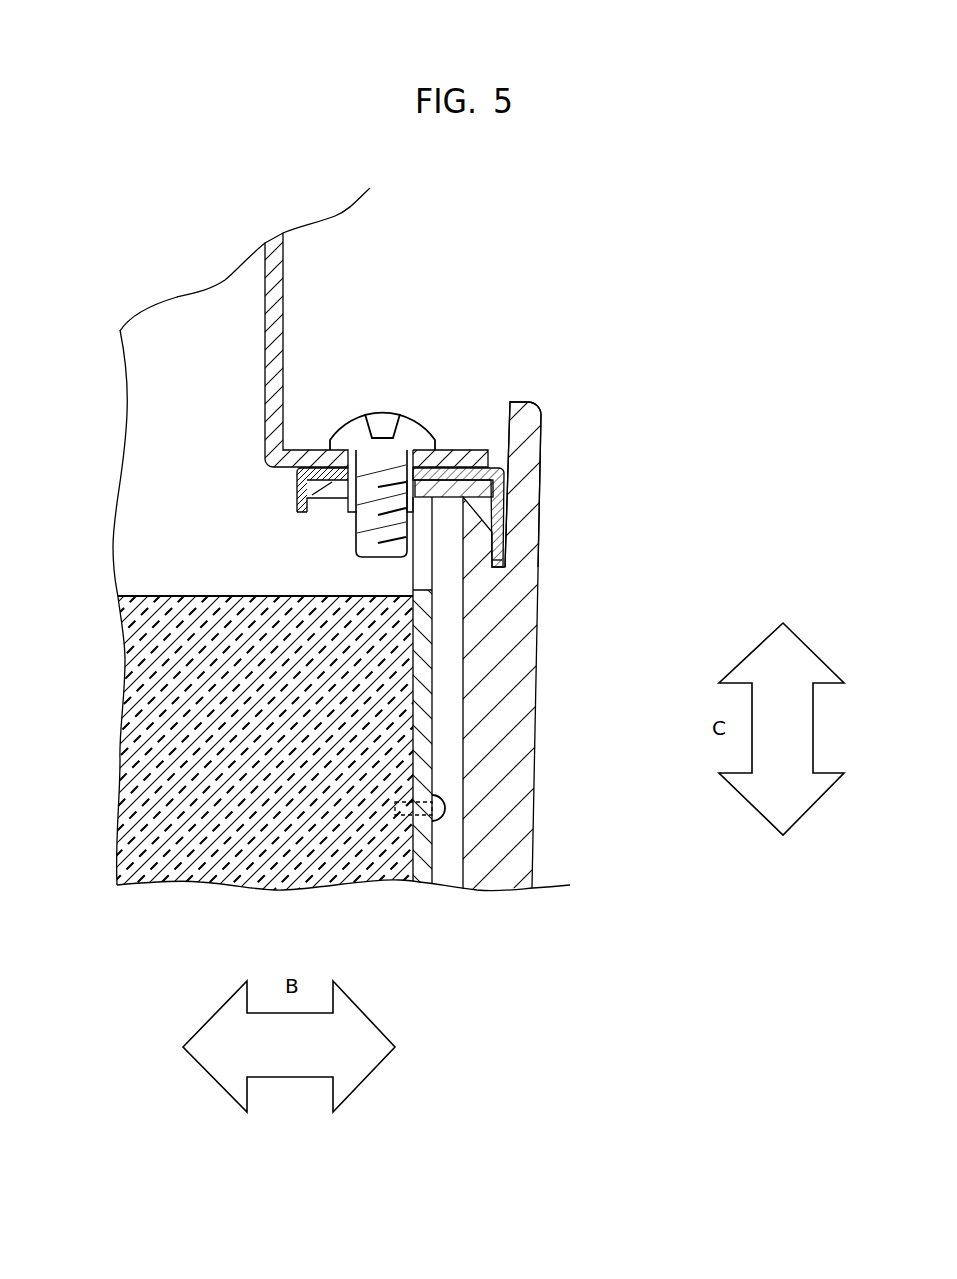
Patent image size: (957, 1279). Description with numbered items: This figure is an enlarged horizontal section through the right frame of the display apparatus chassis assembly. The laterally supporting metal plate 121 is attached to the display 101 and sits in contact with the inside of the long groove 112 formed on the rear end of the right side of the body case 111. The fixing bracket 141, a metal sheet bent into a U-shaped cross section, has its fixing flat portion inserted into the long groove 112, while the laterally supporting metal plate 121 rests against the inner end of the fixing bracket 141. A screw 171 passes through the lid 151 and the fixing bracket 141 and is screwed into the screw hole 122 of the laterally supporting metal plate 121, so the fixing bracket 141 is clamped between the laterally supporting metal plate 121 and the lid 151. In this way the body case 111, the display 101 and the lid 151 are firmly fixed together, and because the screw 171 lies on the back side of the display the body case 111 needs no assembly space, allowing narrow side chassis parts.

The display 101 is at (153, 723).
The body case 111 is at (523, 720).
The long groove 112 is at (503, 550).
The laterally supporting metal plate 121 is at (425, 742).
The screw hole 122 is at (357, 513).
The fixing bracket 141 is at (508, 523).
The lid 151 is at (283, 312).
The screw 171 is at (383, 413).